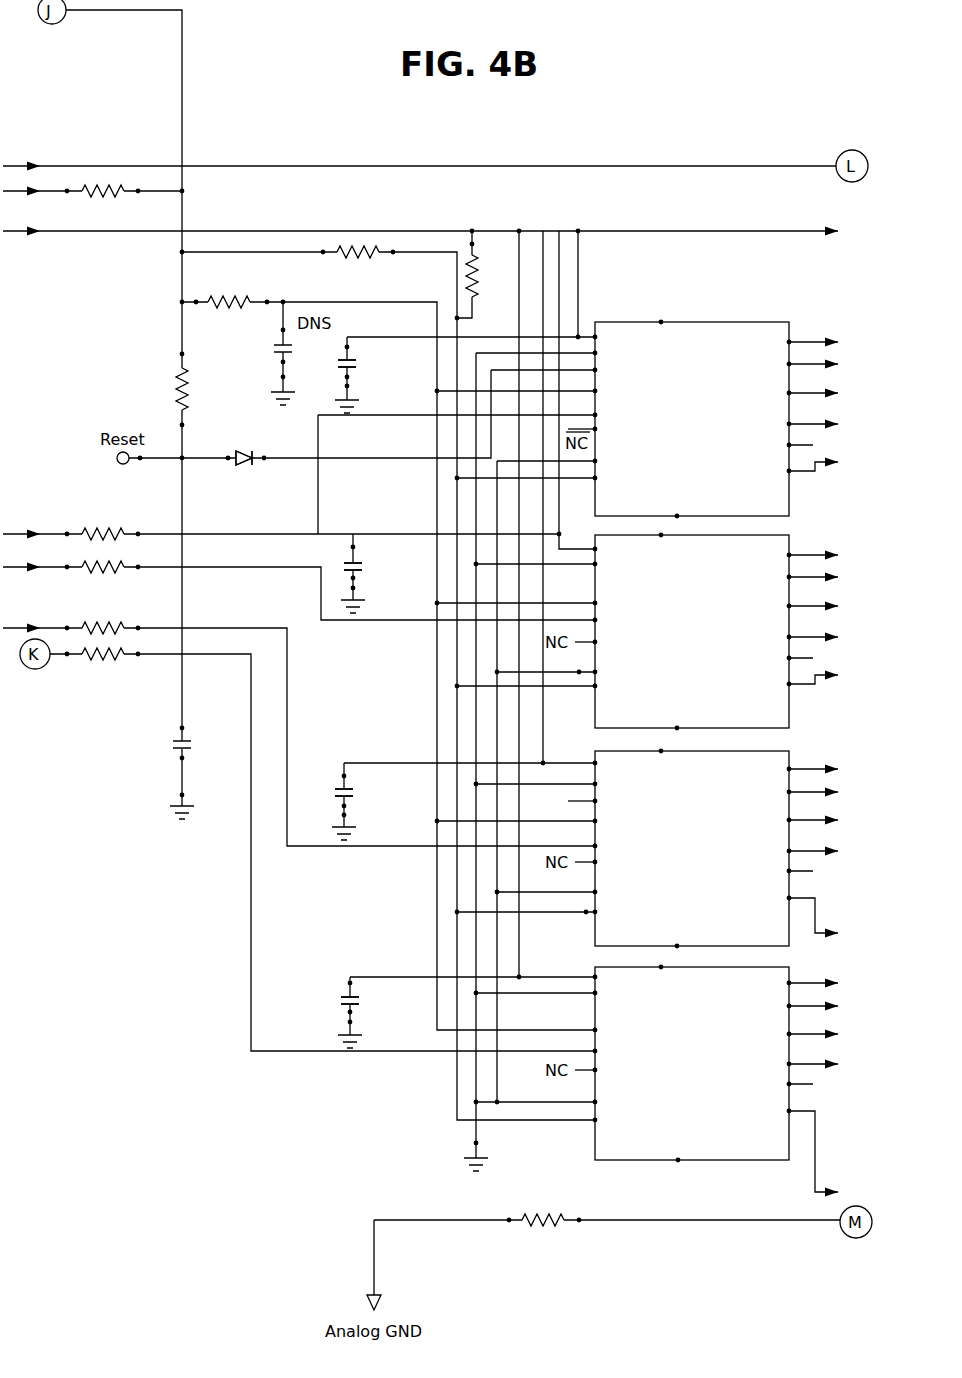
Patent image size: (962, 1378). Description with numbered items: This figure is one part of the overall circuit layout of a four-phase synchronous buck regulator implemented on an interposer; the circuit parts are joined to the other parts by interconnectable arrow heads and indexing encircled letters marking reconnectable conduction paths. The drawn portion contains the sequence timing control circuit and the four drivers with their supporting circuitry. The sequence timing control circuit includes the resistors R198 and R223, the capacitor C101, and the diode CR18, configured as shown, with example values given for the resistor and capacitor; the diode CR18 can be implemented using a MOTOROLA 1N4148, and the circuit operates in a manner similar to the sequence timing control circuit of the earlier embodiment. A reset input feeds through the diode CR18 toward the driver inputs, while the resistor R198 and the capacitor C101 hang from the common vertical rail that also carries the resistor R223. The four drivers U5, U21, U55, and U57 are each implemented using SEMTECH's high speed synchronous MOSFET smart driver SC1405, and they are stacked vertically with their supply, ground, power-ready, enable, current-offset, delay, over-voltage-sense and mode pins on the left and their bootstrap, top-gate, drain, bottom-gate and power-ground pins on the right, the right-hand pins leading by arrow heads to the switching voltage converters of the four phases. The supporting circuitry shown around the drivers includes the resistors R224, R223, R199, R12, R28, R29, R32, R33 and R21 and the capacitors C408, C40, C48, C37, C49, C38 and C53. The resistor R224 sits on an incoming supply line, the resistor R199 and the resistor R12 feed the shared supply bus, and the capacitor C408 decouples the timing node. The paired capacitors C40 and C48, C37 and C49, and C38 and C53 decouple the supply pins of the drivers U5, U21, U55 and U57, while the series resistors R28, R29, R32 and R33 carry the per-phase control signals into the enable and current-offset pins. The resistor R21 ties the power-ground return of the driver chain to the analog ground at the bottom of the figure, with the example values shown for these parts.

The resistor 5.6k R224 is at (103, 193).
The resistor R223 is at (224, 284).
The resistor 0 ohm R199 is at (354, 271).
The resistor 0 ohm DNS R12 is at (491, 283).
The capacitor 1uF C408 is at (252, 357).
The resistor R198 is at (206, 392).
The capacitor 10uF C40 is at (372, 365).
The capacitor 10uF C48 is at (370, 383).
The diode CR18 is at (249, 466).
The resistor 22 ohm R28 is at (101, 523).
The resistor 22 ohm R29 is at (101, 577).
The resistor 22 ohm R32 is at (101, 616).
The resistor 22 ohm R33 is at (101, 664).
The capacitor 10uF C37 is at (375, 569).
The capacitor 10uF C49 is at (373, 587).
The capacitor C101 is at (155, 728).
The capacitor 10uF C38 is at (372, 902).
The capacitor 10uF C53 is at (371, 919).
The resistor 0 ohm R21 is at (543, 1217).
The driver U5 is at (716, 407).
The driver U21 is at (716, 621).
The driver U55 is at (716, 838).
The driver U57 is at (716, 1071).